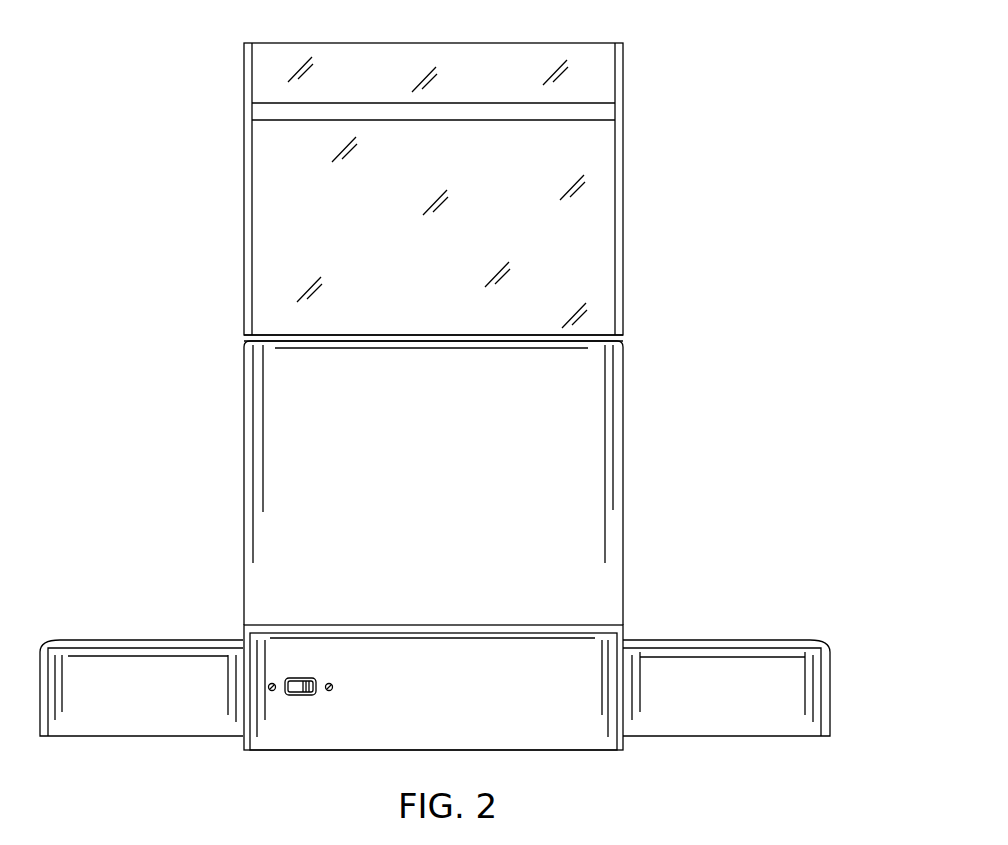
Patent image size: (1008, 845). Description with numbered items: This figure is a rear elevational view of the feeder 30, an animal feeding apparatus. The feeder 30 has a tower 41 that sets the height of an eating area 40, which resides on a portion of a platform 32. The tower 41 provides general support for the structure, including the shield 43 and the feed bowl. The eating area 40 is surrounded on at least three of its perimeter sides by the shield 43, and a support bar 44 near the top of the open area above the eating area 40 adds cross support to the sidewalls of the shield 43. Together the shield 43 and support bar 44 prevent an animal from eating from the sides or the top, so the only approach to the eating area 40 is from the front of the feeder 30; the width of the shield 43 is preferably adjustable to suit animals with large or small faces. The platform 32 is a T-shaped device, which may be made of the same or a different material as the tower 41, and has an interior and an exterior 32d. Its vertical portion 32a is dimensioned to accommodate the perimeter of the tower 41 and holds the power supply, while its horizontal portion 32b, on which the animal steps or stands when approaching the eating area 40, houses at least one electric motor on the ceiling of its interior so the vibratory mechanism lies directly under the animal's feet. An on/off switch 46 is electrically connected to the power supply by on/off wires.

The feeder 30 is at (465, 402).
The shield 43 is at (620, 153).
The support bar 44 is at (610, 112).
The eating area 40 is at (583, 334).
The tower 41 is at (603, 400).
The platform 32 is at (465, 697).
The vertical portion 32a is at (572, 738).
The horizontal portion 32b is at (805, 690).
The exterior 32d is at (137, 725).
The on/off switch 46 is at (300, 696).